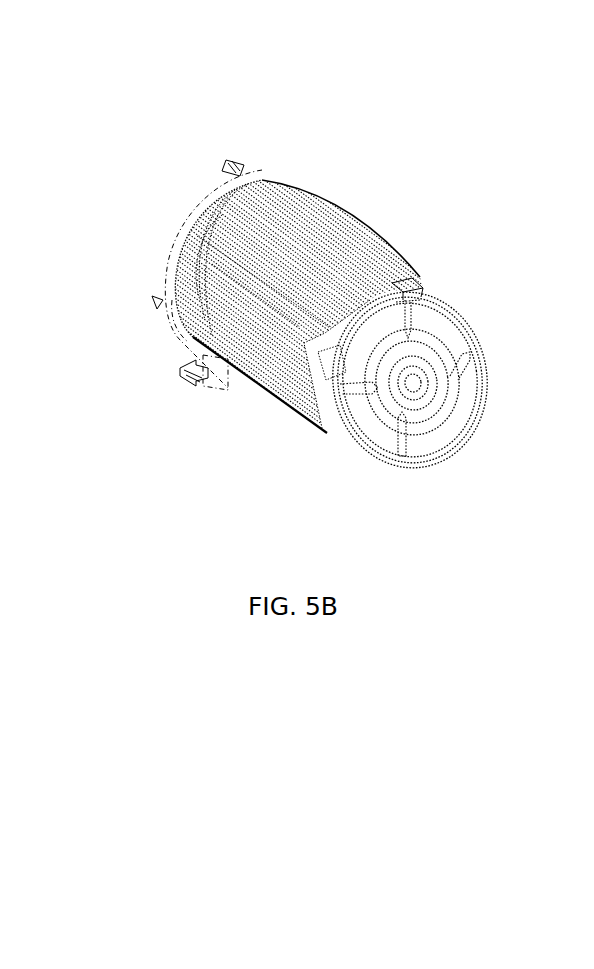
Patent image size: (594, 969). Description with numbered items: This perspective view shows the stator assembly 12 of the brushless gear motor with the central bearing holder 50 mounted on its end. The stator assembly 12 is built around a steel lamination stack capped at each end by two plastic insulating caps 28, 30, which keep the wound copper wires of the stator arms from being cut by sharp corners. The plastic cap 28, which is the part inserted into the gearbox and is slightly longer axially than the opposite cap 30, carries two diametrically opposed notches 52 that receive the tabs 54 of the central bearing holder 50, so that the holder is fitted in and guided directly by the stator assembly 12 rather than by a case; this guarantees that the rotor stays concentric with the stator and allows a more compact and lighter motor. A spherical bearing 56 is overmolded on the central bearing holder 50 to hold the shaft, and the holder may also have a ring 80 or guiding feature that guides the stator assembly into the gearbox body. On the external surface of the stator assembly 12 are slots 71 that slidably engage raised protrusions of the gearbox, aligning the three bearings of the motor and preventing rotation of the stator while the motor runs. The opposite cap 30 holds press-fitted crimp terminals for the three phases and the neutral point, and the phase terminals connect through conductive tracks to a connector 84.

The stator assembly 12 is at (378, 234).
The plastic cap 28 is at (315, 388).
The plastic cap 30 is at (192, 231).
The central bearing holder 50 is at (452, 430).
The notches 52 is at (412, 278).
The tabs 54 is at (393, 284).
The spherical bearing 56 is at (416, 384).
The slots 71 is at (262, 296).
The ring 80 is at (358, 443).
The connector 84 is at (219, 390).